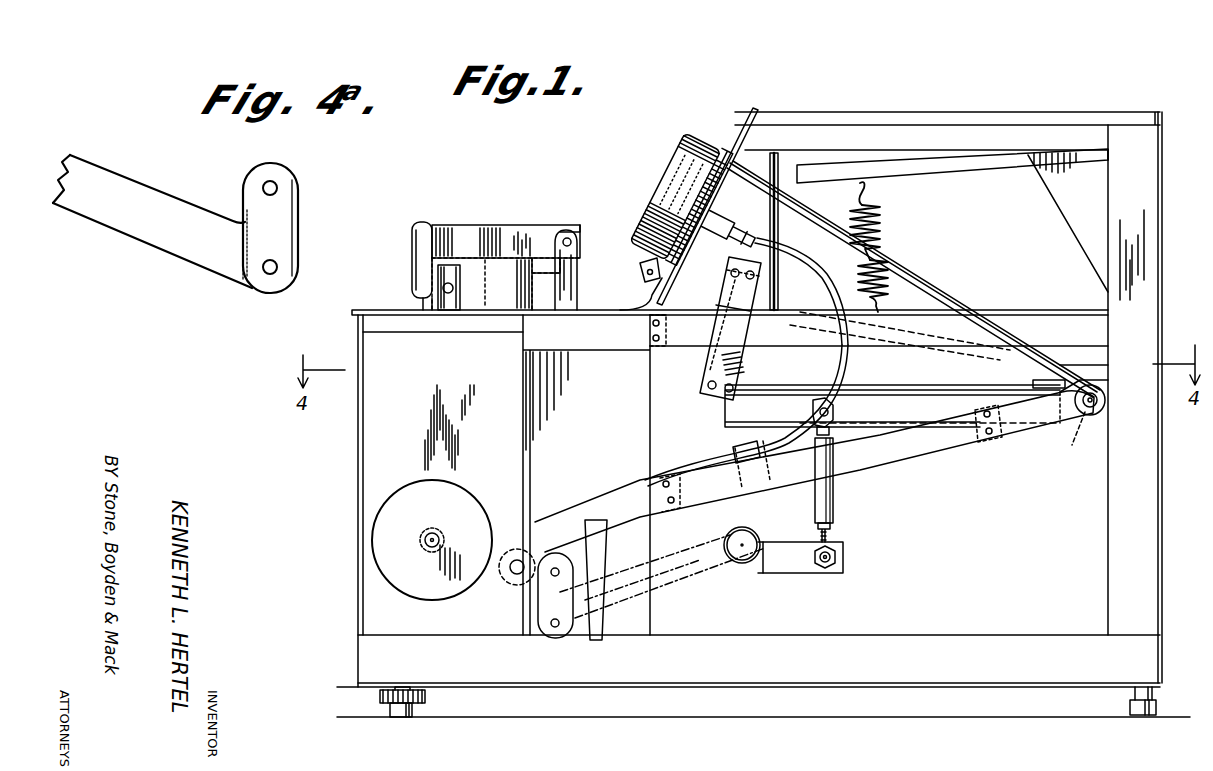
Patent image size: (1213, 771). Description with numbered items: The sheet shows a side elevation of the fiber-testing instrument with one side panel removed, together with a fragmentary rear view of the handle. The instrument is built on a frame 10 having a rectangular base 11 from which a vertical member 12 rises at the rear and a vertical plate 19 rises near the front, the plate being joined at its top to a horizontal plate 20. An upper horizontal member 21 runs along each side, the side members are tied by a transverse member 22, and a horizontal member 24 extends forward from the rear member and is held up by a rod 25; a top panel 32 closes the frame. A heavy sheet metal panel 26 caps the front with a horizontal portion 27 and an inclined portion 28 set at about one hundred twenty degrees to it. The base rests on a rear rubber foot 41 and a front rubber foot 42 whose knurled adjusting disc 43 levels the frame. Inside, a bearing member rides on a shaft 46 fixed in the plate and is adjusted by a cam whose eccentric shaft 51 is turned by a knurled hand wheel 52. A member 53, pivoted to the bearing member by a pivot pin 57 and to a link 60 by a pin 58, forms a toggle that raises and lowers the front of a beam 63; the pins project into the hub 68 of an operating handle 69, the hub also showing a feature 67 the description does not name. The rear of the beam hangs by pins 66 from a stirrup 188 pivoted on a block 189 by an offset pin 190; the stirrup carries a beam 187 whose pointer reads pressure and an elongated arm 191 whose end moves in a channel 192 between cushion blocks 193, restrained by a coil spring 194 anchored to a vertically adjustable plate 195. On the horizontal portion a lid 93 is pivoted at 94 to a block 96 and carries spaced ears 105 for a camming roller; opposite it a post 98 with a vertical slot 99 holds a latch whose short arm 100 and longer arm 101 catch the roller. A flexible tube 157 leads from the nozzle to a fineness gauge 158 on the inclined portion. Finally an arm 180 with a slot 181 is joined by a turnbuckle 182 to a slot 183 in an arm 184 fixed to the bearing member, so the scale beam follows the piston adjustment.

In FIG. 1, the frame 10 is at (896, 694).
In FIG. 1, the rectangular base 11 is at (700, 665).
In FIG. 1, the vertical member 12 is at (1090, 555).
In FIG. 1, the vertical plate 19 is at (385, 478).
In FIG. 1, the horizontal plate 20 is at (402, 322).
In FIG. 1, the upper horizontal member 21 is at (590, 345).
In FIG. 1, the transverse member 22 is at (668, 330).
In FIG. 1, the horizontal member 24 is at (905, 135).
In FIG. 1, the rod 25 is at (780, 172).
In FIG. 1, the sheet metal panel 26 is at (612, 285).
In FIG. 1, the horizontal portion 27 is at (374, 308).
In FIG. 1, the panel portion 28 is at (755, 108).
In FIG. 1, the top panel 32 is at (1055, 120).
In FIG. 1, the rubber foot 41 is at (1140, 704).
In FIG. 1, the rubber foot 42 is at (399, 714).
In FIG. 1, the knurled adjusting disc 43 is at (428, 697).
In FIG. 1, the shaft 46 is at (512, 566).
In FIG. 1, the eccentric shaft 51 is at (428, 552).
In FIG. 1, the knurled hand wheel 52 is at (470, 512).
In FIG. 1, the member 53 is at (550, 590).
In FIG. 1, the pivot pin 57 is at (550, 575).
In FIG. 1, the pin 58 is at (559, 628).
In FIG. 1, the link 60 is at (650, 545).
In FIG. 1, the beam 63 is at (967, 445).
In FIG. 1, the pins 66 is at (1090, 416).
In FIG. 4A, the holes 67 is at (277, 262).
In FIG. 4A, the hub 68 is at (244, 190).
In FIG. 4A, the operating handle 69 is at (148, 223).
In FIG. 1, the operating handle 69 is at (736, 563).
In FIG. 1, the lid 93 is at (516, 245).
In FIG. 1, the pivotal connection 94 is at (572, 242).
In FIG. 1, the block 96 is at (570, 275).
In FIG. 1, the post 98 is at (470, 310).
In FIG. 1, the vertical slot 99 is at (425, 310).
In FIG. 1, the short arm 100 is at (428, 292).
In FIG. 1, the longer arm 101 is at (408, 237).
In FIG. 1, the spaced ears 105 is at (442, 230).
In FIG. 1, the flexible tube 157 is at (849, 369).
In FIG. 1, the fiber fineness indicating gauge 158 is at (685, 200).
In FIG. 1, the arm 180 is at (946, 402).
In FIG. 1, the longitudinal slot 181 is at (770, 412).
In FIG. 1, the turnbuckle 182 is at (833, 493).
In FIG. 1, the longitudinal slot 183 is at (790, 535).
In FIG. 1, the arm 184 is at (768, 575).
In FIG. 1, the beam 187 is at (958, 300).
In FIG. 1, the stirrup 188 is at (1195, 364).
In FIG. 1, the block 189 is at (1055, 380).
In FIG. 1, the pin 190 is at (1059, 432).
In FIG. 1, the elongated arm 191 is at (848, 300).
In FIG. 1, the channel 192 is at (718, 358).
In FIG. 1, the cushion block 193 is at (724, 280).
In FIG. 1, the coil spring 194 is at (885, 224).
In FIG. 1, the plate 195 is at (982, 162).